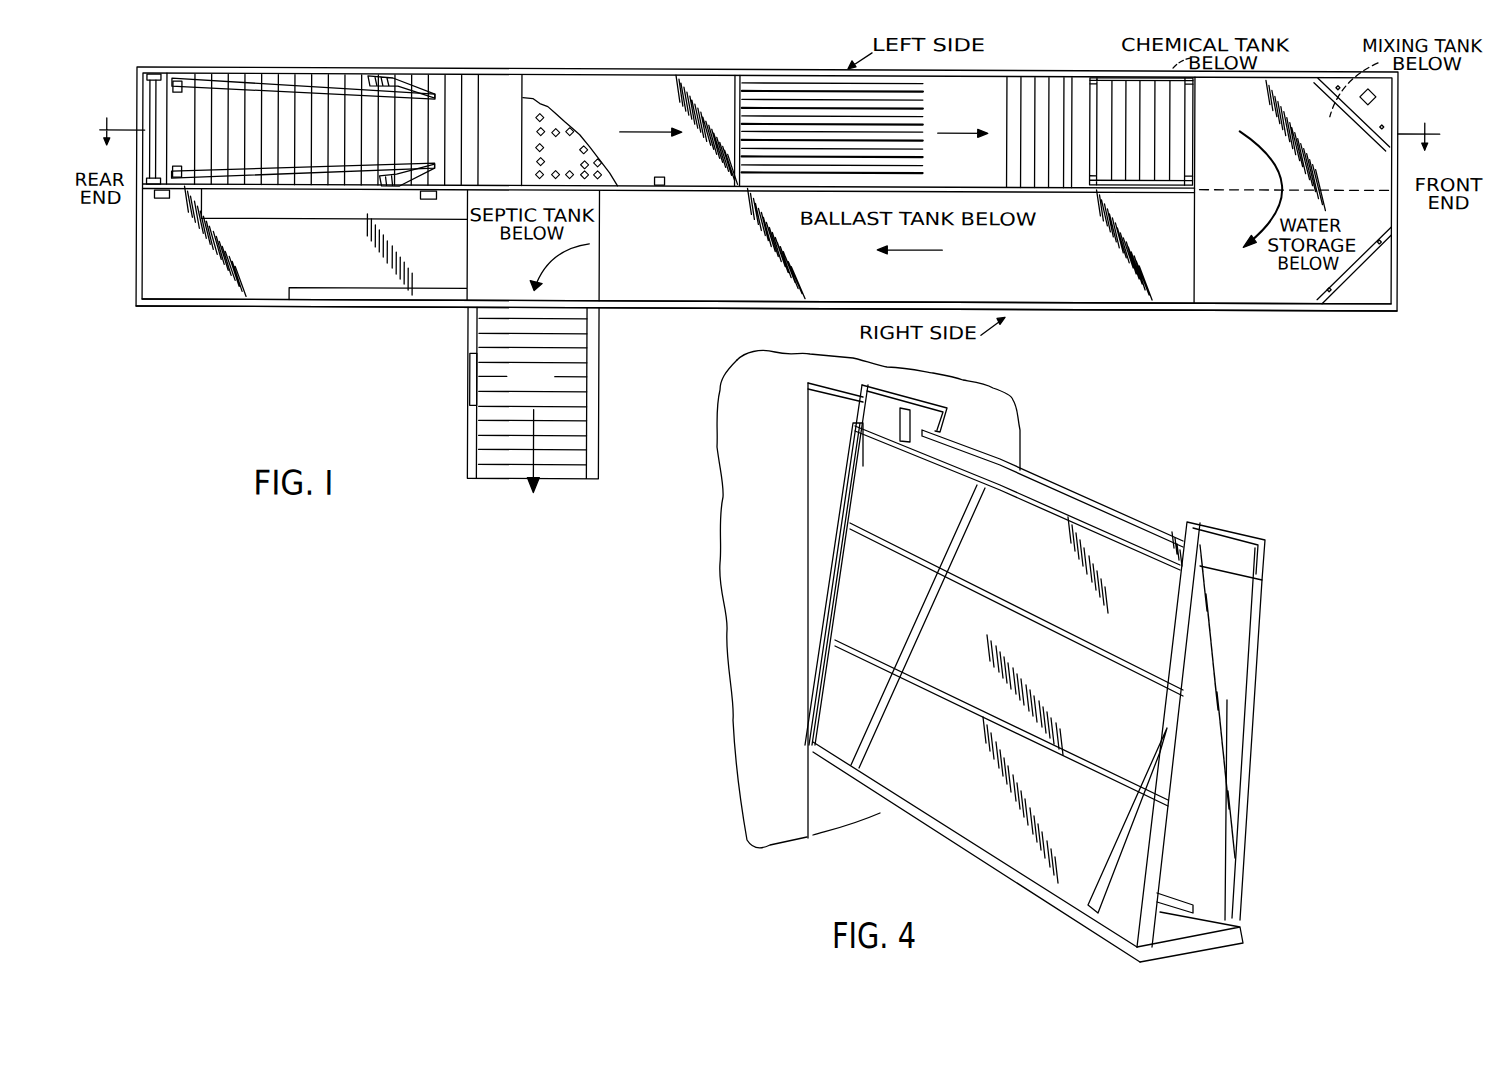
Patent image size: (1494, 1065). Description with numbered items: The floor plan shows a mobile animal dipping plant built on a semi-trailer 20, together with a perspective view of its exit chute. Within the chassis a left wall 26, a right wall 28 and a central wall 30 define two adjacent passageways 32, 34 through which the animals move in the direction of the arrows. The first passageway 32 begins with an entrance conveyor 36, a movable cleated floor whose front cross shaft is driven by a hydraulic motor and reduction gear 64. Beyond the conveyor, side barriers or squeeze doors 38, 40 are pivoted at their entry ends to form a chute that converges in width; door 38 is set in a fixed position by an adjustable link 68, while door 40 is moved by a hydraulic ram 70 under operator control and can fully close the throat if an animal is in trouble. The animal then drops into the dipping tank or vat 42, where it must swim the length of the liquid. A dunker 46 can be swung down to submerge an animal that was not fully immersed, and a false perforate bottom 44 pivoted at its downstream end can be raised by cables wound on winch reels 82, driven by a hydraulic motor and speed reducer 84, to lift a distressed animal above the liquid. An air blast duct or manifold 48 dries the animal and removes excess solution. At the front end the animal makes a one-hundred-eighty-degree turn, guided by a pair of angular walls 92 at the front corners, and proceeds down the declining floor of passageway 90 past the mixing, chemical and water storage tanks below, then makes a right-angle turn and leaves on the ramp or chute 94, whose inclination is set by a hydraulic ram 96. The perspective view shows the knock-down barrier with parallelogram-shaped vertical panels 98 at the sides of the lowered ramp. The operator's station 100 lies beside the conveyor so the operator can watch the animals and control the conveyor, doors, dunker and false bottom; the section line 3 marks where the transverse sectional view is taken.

In FIG. 1, the section line 3- 3 is at (770, 145).
In FIG. 1, the semi-trailer 20 is at (1190, 318).
In FIG. 1, the left wall 26 is at (674, 70).
In FIG. 1, the right wall 28 is at (655, 306).
In FIG. 1, the central wall 30 is at (737, 191).
In FIG. 1, the passageway 32 is at (560, 88).
In FIG. 1, the passageway 34 is at (828, 284).
In FIG. 1, the entrance conveyor 36 is at (337, 134).
In FIG. 1, the squeeze door 38 is at (264, 82).
In FIG. 1, the squeeze door 40 is at (270, 177).
In FIG. 1, the dipping tank 42 is at (715, 90).
In FIG. 1, the false perforate bottom 44 is at (572, 164).
In FIG. 1, the dunker 46 is at (921, 135).
In FIG. 1, the air blast duct 48 is at (1083, 84).
In FIG. 1, the hydraulic motor and reduction gear 64 is at (426, 194).
In FIG. 1, the adjustable link 68 is at (389, 76).
In FIG. 1, the hydraulic ram 70 is at (386, 185).
In FIG. 1, the winch reels 82 is at (153, 73).
In FIG. 1, the hydraulic motor and speed reducer 84 is at (160, 198).
In FIG. 1, the passageway 90 is at (1088, 257).
In FIG. 1, the angular walls 92 is at (1353, 115).
In FIG. 1, the ramp 94 is at (547, 385).
In FIG. 1, the hydraulic ram 96 is at (472, 382).
In FIG. 4, the vertical panels 98 is at (1005, 790).
In FIG. 1, the operator's station 100 is at (333, 263).